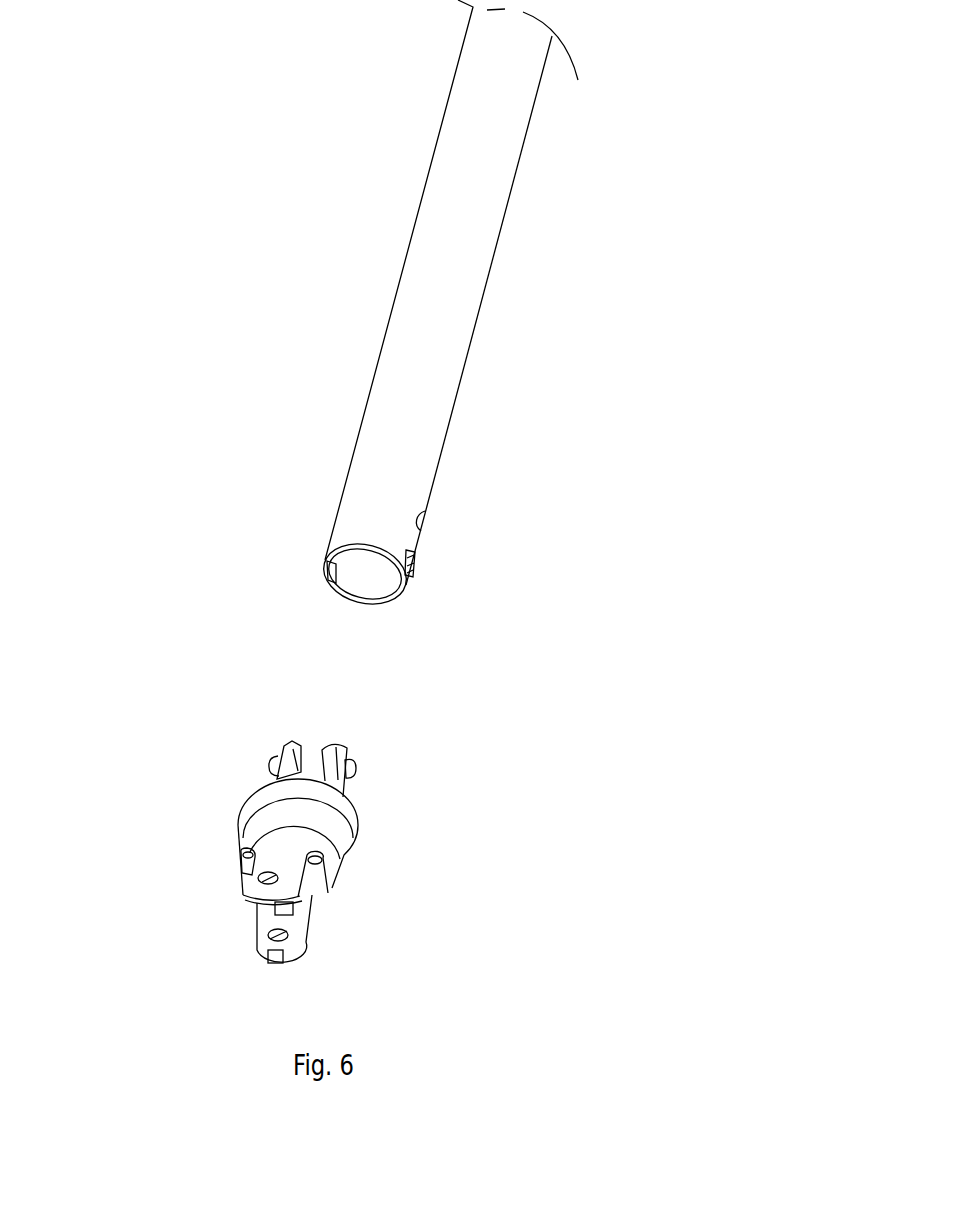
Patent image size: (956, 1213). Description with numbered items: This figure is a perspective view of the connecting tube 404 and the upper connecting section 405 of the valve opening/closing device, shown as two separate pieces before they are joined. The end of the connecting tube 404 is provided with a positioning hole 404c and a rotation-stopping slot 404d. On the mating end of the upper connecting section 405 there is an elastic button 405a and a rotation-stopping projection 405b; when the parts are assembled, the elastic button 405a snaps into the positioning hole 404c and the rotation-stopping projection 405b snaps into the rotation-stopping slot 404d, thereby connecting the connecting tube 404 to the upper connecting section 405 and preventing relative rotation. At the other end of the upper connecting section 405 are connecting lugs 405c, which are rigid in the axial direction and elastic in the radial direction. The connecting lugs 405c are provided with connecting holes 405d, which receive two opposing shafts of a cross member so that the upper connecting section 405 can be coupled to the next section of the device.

The connecting tube 404 is at (448, 323).
The positioning hole 404c is at (422, 522).
The rotation-stopping slot 404d is at (400, 567).
The upper connecting section 405 is at (290, 795).
The elastic button 405a is at (277, 760).
The rotation-stopping projection 405b is at (345, 805).
The connecting lugs 405c is at (262, 862).
The connecting holes 405d is at (272, 880).